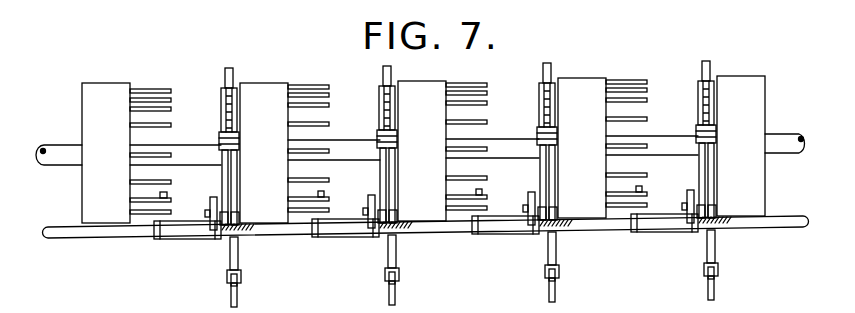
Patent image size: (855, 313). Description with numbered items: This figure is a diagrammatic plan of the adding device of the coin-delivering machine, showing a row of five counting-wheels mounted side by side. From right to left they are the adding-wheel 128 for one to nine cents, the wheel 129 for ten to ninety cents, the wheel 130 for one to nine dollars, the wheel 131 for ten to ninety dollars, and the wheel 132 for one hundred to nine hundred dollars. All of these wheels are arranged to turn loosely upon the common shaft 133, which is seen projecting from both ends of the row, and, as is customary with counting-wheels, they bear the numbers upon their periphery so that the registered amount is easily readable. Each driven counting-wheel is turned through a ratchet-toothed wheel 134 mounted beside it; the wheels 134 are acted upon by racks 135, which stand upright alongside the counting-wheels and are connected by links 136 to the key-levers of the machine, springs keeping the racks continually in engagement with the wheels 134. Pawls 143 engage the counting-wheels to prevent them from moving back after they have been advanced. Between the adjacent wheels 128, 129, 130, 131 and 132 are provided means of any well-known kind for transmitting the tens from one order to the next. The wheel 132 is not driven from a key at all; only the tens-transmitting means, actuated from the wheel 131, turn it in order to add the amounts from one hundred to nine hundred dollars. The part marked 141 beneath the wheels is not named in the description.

The adding-wheel 128 is at (757, 80).
The wheel 129 is at (604, 77).
The wheel 130 is at (448, 79).
The wheel 131 is at (286, 85).
The wheel 132 is at (130, 84).
The shaft 133 is at (64, 144).
The wheels having ratchet-teeth 134 is at (222, 141).
The racks 135 is at (225, 78).
The links 136 is at (238, 295).
The sleeve on base bar 141 is at (184, 233).
The pawls 143 is at (230, 189).